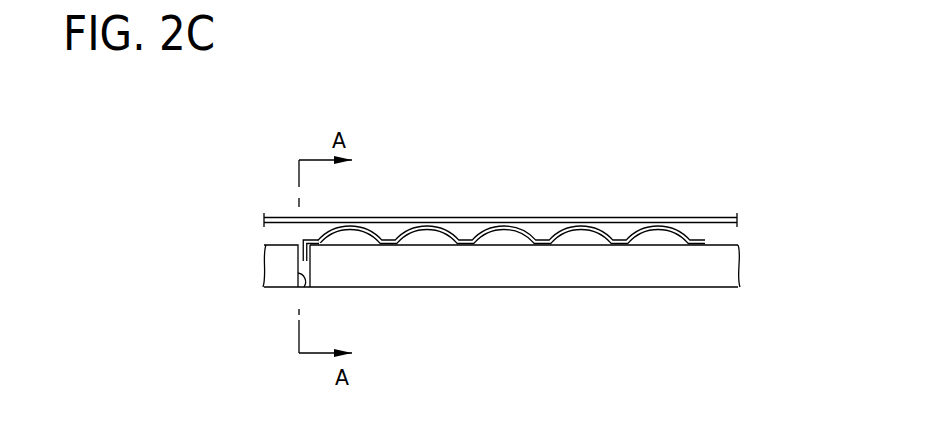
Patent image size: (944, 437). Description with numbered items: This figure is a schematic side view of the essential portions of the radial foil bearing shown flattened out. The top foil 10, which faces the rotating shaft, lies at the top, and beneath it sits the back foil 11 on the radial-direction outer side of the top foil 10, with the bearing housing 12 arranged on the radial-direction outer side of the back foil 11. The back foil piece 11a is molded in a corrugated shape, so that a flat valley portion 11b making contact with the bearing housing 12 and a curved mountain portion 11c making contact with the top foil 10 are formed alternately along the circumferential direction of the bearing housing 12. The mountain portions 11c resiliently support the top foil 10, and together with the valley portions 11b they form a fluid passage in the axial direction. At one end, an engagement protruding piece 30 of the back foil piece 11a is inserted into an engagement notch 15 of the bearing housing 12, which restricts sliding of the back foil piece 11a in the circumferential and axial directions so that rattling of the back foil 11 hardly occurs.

The top foil 10 is at (543, 218).
The back foil 11 is at (502, 240).
The back foil piece 11a is at (512, 293).
The valley portion 11b is at (466, 239).
The mountain portion 11c is at (425, 226).
The bearing housing 12 is at (408, 273).
The engagement notch 15 is at (305, 287).
The engagement protruding piece 30 is at (302, 256).